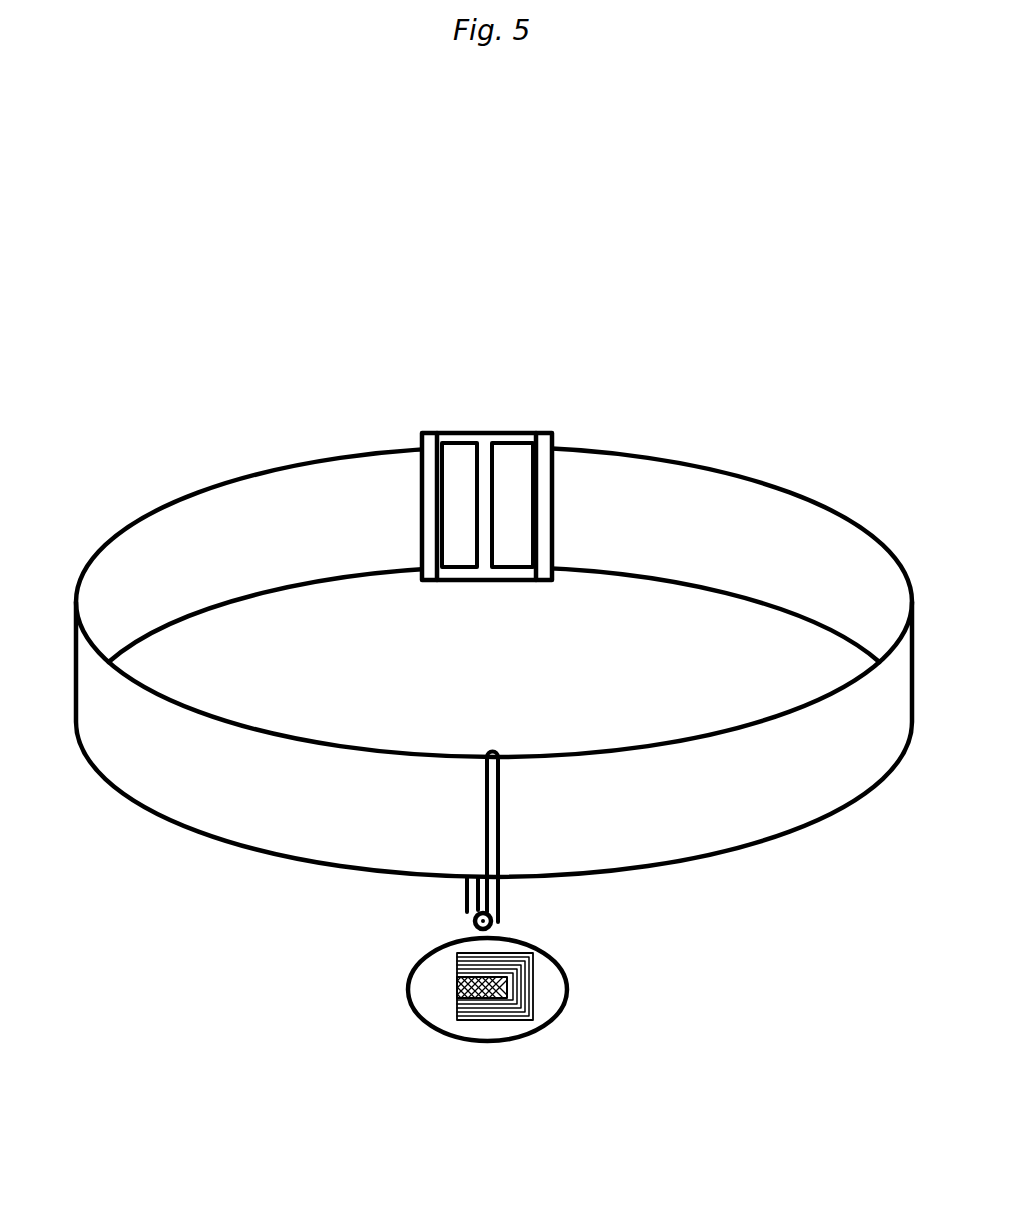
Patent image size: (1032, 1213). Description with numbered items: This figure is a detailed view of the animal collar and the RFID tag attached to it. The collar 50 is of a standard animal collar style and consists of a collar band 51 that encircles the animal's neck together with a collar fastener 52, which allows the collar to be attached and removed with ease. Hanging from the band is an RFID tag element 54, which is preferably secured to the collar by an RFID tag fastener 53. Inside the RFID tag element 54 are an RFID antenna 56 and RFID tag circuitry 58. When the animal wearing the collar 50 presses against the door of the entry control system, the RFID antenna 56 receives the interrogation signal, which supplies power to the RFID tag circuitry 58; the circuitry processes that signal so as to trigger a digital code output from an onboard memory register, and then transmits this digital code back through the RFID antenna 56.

The collar 50 is at (494, 732).
The collar band 51 is at (287, 508).
The collar fastener 52 is at (485, 447).
The RFID tag fastener 53 is at (502, 915).
The RFID tag element 54 is at (468, 1059).
The RFID antenna 56 is at (528, 990).
The RFID tag circuitry 58 is at (497, 997).